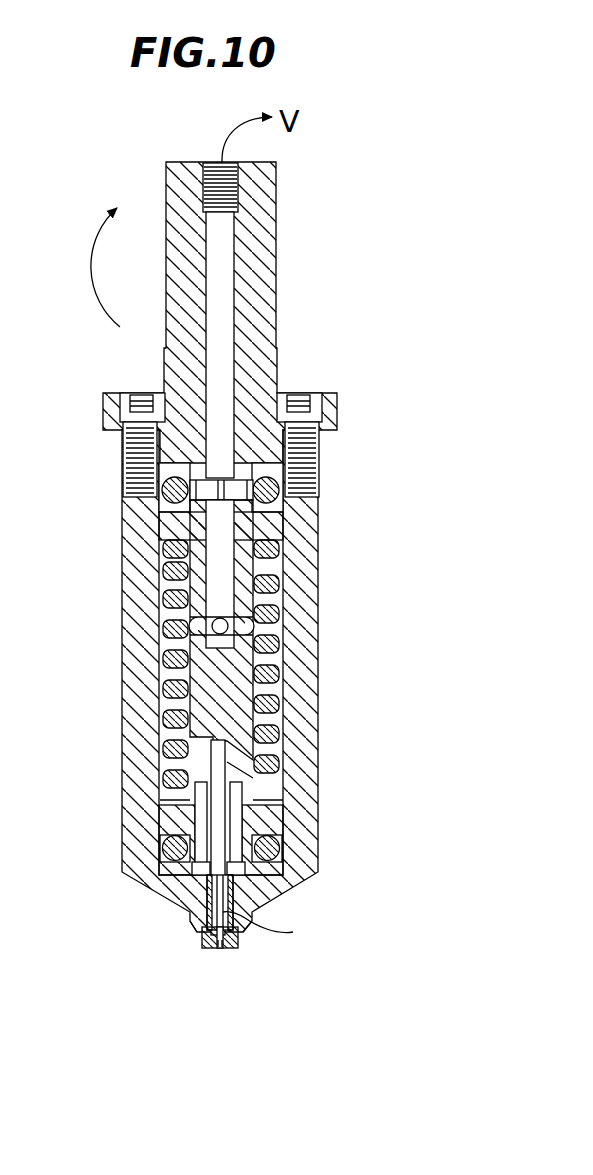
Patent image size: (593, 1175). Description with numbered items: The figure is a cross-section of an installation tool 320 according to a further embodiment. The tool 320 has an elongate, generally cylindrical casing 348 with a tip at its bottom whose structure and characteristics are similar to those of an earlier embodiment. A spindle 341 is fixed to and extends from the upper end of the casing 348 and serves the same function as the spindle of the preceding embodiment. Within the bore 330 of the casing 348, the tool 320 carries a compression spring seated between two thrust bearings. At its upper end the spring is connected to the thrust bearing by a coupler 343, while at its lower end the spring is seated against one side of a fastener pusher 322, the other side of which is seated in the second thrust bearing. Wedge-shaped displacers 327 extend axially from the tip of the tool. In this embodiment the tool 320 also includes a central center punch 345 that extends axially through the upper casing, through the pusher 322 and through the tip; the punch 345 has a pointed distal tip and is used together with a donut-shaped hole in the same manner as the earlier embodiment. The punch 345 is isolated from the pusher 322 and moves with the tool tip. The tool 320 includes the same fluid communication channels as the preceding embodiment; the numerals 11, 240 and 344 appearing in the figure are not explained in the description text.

The fluid 11 is at (220, 945).
The outlet 240 is at (192, 930).
The installation tool 320 is at (120, 510).
The fastener pusher 322 is at (163, 815).
The wedge-shaped displacers 327 is at (243, 933).
The bore 330 is at (270, 560).
The spindle 341 is at (277, 270).
The coupler 343 is at (180, 520).
The valve stem 344 is at (237, 795).
The center punch 345 is at (200, 688).
The casing 348 is at (318, 655).